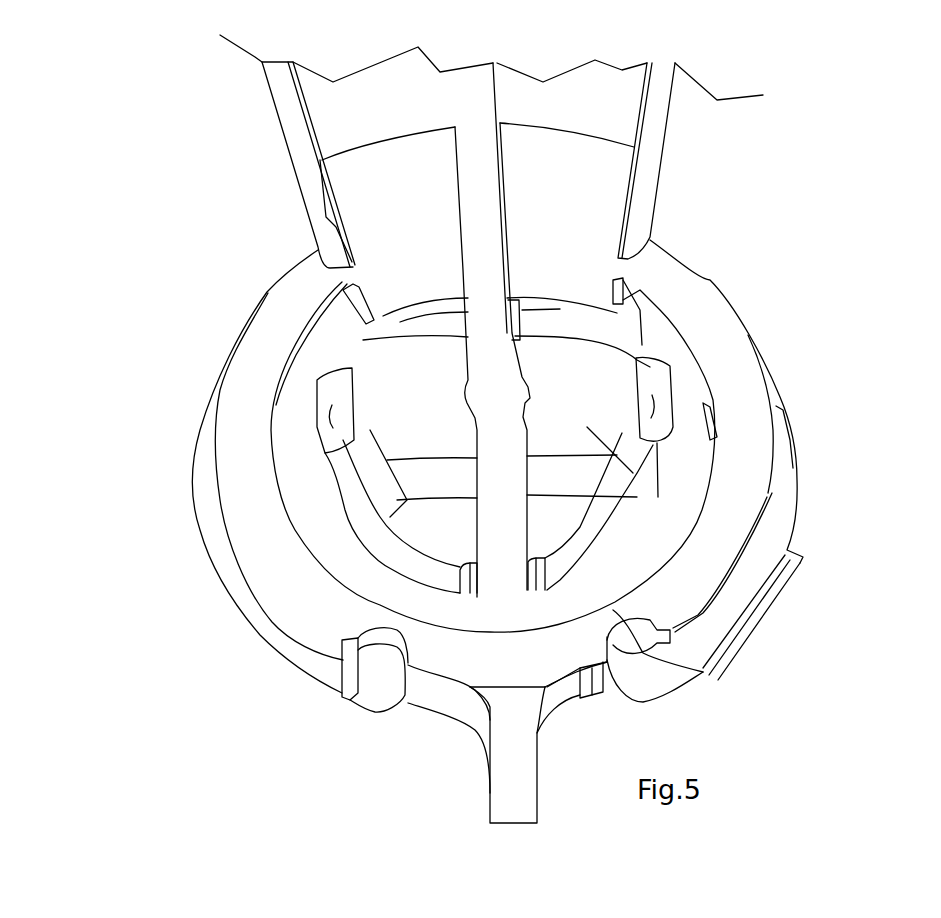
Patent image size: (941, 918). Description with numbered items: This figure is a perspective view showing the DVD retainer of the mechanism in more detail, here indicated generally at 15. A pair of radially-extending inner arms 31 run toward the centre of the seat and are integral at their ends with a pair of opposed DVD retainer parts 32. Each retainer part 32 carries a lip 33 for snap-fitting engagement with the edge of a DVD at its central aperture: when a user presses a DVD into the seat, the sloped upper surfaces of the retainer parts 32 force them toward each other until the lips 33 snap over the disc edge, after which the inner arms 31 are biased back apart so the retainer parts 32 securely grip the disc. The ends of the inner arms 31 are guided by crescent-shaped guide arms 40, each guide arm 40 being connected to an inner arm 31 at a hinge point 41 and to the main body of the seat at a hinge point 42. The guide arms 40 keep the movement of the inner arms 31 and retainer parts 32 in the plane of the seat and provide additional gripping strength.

The blade cartridge assembly 15 is at (863, 188).
The inner arm 31 is at (387, 208).
The DVD retainer part 32 is at (403, 430).
The lip 33 is at (318, 420).
The guide arm 40 is at (245, 463).
The hinge point 41 is at (347, 278).
The hinge point 42 is at (383, 620).